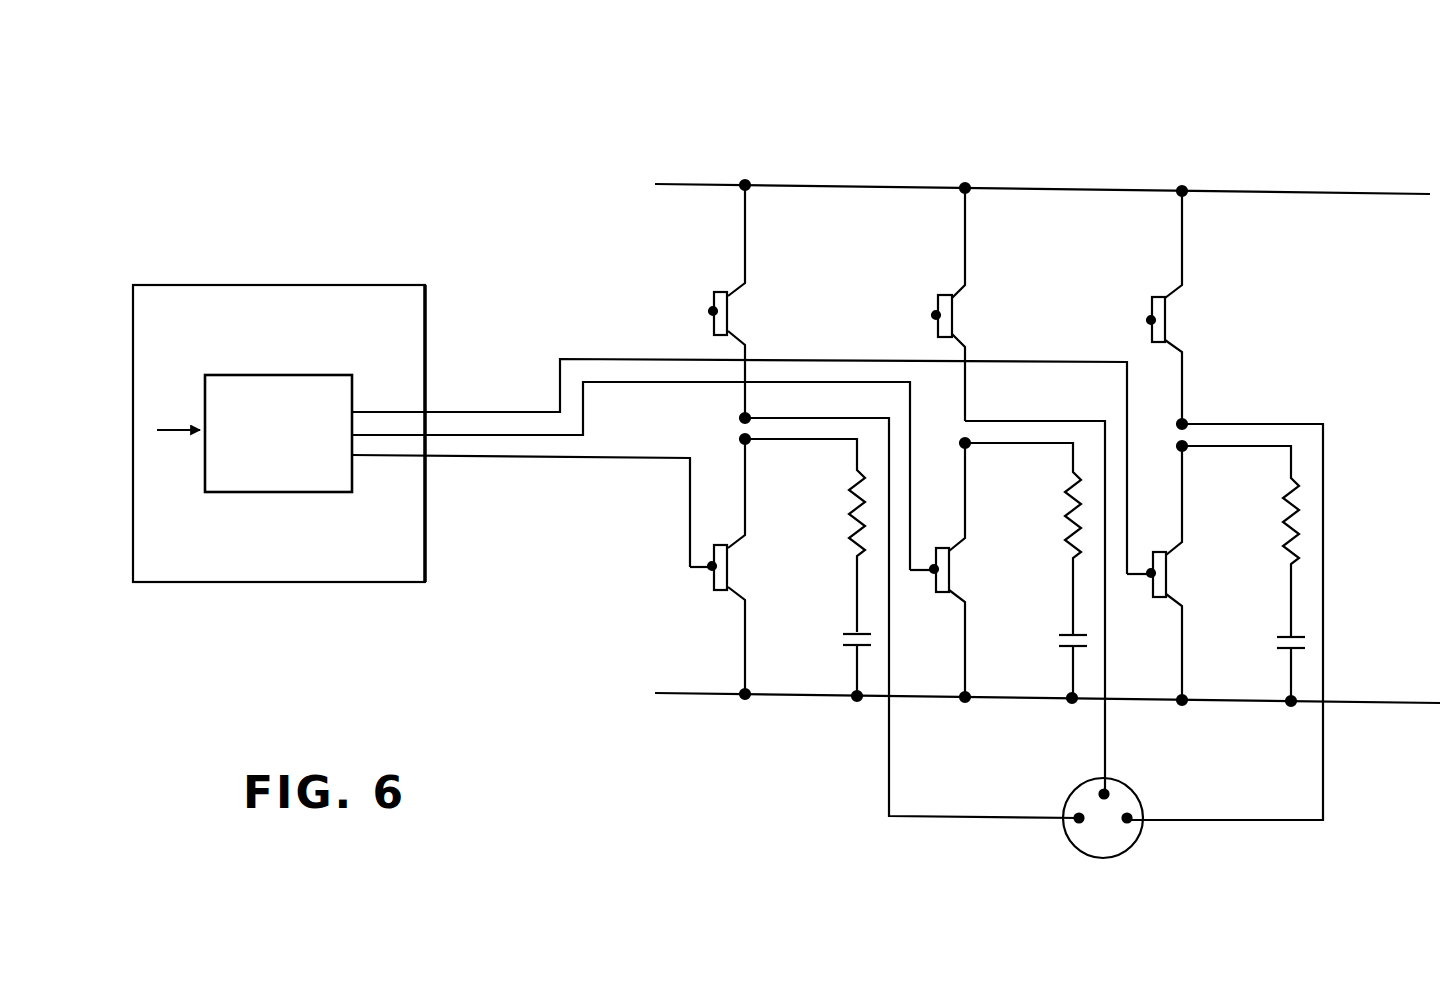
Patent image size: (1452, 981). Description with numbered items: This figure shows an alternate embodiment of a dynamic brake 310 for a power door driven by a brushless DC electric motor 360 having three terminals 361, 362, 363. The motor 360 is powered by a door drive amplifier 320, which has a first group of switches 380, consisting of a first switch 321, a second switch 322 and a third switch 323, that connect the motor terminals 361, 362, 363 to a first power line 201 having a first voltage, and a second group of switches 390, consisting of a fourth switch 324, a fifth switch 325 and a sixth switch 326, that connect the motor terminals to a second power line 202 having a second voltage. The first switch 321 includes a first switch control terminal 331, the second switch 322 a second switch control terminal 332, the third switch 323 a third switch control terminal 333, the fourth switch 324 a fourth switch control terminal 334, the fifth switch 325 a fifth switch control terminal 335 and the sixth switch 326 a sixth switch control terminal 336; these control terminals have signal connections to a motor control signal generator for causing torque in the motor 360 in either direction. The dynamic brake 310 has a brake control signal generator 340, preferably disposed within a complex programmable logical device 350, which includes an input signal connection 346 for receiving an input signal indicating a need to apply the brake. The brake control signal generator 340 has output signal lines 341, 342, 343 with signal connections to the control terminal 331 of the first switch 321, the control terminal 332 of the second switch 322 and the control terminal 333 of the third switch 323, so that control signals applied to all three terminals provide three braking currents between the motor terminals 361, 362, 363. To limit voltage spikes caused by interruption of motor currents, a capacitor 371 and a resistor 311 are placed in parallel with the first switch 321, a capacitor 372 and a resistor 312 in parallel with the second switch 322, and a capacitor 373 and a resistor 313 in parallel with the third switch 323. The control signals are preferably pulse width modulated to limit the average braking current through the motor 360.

The dynamic brake 310 is at (471, 70).
The door drive amplifier 320 is at (1260, 143).
The second power line 202 is at (1132, 189).
The first power line 201 is at (1238, 703).
The complex programmable logical device 350 is at (348, 285).
The brake control signal generator 340 is at (302, 477).
The input signal connection 346 is at (172, 437).
The fourth switch 324 is at (752, 313).
The fifth switch 325 is at (970, 314).
The sixth switch 326 is at (1182, 318).
The fourth switch control terminal 334 is at (713, 311).
The fifth switch control terminal 335 is at (936, 315).
The sixth switch control terminal 336 is at (1151, 320).
The first switch 321 is at (745, 567).
The second switch 322 is at (965, 568).
The third switch 323 is at (1182, 575).
The first switch control terminal 331 is at (711, 567).
The second switch control terminal 332 is at (934, 570).
The third switch control terminal 333 is at (1151, 574).
The output signal line 341 is at (690, 503).
The output signal line 342 is at (910, 400).
The output signal line 343 is at (1127, 395).
The resistor 311 is at (852, 509).
The resistor 312 is at (1068, 512).
The resistor 313 is at (1286, 514).
The capacitor 371 is at (851, 636).
The capacitor 372 is at (1067, 638).
The capacitor 373 is at (1286, 641).
The electric motor 360 is at (1072, 793).
The motor terminal 361 is at (1078, 823).
The motor terminal 362 is at (1107, 793).
The motor terminal 363 is at (1128, 823).
The first group of switches 380 is at (1340, 606).
The second group of switches 390 is at (1252, 380).